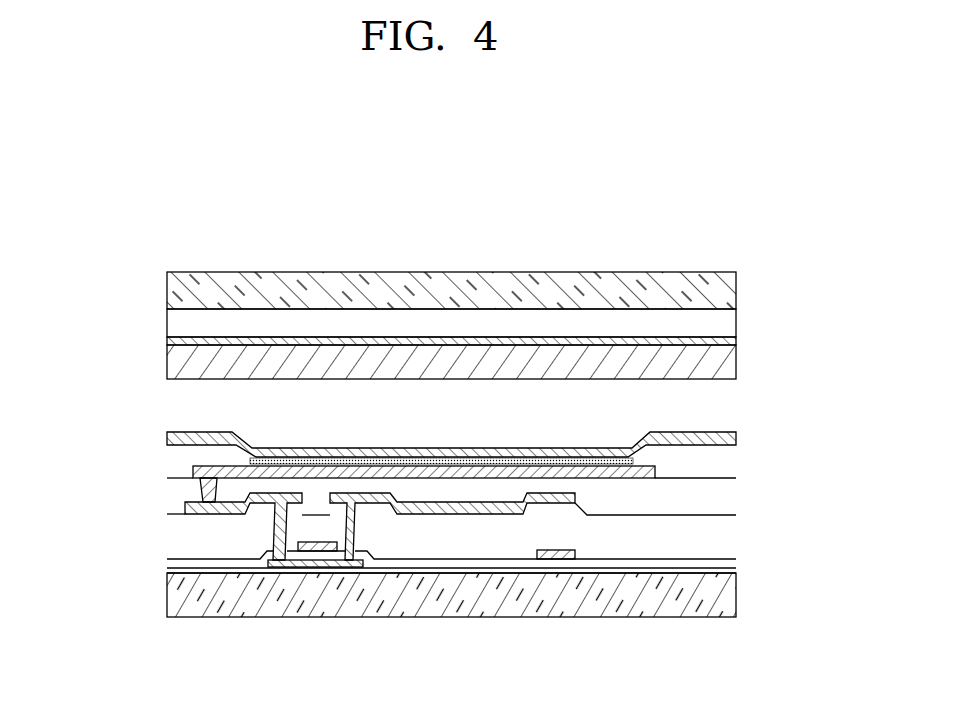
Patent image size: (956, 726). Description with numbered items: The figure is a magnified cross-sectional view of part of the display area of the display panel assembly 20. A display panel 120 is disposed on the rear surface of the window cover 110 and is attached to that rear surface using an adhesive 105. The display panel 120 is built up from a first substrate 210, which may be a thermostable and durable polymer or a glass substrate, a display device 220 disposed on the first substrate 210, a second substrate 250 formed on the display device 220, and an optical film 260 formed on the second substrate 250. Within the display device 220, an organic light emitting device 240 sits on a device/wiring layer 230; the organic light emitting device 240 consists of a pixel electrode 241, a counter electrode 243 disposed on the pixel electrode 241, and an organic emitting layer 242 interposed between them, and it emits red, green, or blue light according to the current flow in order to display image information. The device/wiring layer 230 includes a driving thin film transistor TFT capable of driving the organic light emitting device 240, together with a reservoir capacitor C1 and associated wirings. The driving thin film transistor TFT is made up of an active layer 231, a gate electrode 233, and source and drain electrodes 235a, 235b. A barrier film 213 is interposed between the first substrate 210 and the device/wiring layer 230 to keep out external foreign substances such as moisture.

The display panel assembly 20 is at (736, 210).
The window cover 110 is at (738, 293).
The adhesive 105 is at (738, 323).
The display panel 120 is at (746, 338).
The optical film 260 is at (167, 341).
The second substrate 250 is at (167, 362).
The display device 220 is at (103, 448).
The organic light emitting device 240 is at (161, 430).
The counter electrode 243 is at (496, 448).
The organic emitting layer 242 is at (428, 458).
The pixel electrode 241 is at (365, 466).
The device/wiring layer 230 is at (161, 480).
The drain electrode 235b is at (218, 514).
The source electrode 235a is at (433, 514).
The driving thin film transistor TFT is at (451, 612).
The gate electrode 233 is at (312, 551).
The active layer 231 is at (355, 567).
The reservoir capacitor C1 is at (548, 503).
The barrier film 213 is at (167, 573).
The first substrate 210 is at (167, 605).